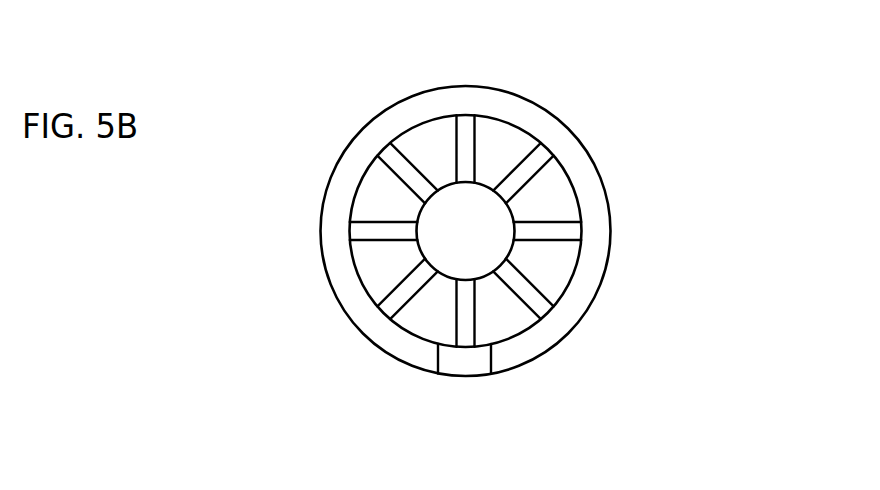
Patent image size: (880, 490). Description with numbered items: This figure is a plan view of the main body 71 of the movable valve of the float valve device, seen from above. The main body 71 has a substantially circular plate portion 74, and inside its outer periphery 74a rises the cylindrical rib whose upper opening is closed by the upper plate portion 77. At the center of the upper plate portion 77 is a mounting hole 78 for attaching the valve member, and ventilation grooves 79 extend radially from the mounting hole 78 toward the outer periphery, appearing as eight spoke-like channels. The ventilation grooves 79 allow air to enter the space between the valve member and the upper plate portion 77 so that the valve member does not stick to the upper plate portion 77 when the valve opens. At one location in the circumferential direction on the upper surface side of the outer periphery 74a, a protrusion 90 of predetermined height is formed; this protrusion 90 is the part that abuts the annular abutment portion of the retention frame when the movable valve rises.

The main body 71 is at (603, 143).
The plate portion 74 is at (586, 231).
The outer periphery 74a is at (540, 338).
The upper plate portion 77 is at (502, 137).
The mounting hole 78 is at (452, 190).
The ventilation grooves 79 is at (384, 156).
The protrusion 90 is at (465, 365).